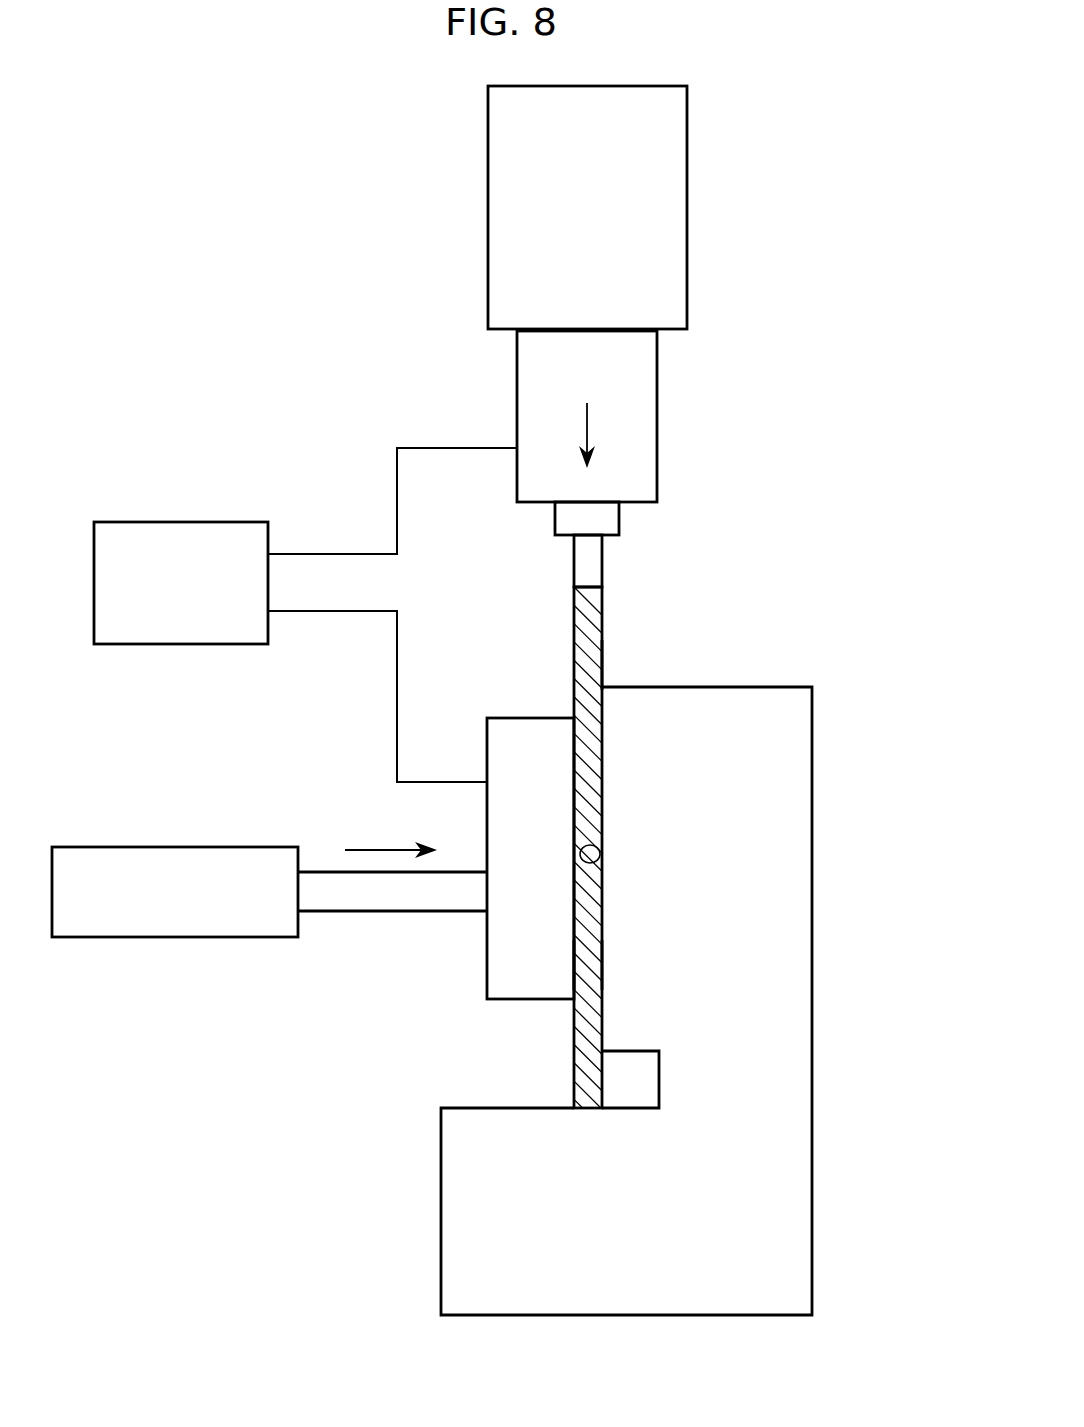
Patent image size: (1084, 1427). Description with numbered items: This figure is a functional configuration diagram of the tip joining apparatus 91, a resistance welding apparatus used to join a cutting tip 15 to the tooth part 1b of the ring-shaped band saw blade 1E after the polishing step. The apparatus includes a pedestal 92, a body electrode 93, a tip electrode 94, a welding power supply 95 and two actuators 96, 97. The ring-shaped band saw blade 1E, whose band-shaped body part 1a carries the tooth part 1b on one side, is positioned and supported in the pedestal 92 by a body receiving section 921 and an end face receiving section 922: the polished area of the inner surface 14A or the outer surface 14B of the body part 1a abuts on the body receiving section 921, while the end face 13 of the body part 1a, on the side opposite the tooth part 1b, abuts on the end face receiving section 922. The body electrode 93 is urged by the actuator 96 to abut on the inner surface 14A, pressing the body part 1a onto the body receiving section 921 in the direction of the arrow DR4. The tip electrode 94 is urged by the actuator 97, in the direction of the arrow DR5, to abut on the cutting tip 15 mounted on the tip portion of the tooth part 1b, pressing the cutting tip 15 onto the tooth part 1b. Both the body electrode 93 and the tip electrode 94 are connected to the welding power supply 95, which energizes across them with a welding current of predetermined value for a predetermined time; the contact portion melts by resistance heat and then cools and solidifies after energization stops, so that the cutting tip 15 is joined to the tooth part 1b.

The actuator 97 is at (687, 199).
The tip joining apparatus 91 is at (855, 284).
The tip electrode 94 is at (657, 464).
The arrow DR5 is at (590, 418).
The cutting tip 15 is at (619, 513).
The tooth part 1b is at (602, 560).
The ring-shaped band saw blade 1E is at (602, 617).
The body part 1a is at (602, 663).
The pedestal 92 is at (812, 862).
The end face receiving section 922 is at (486, 1107).
The body receiving section 921 is at (600, 845).
The outer surface 14B is at (602, 963).
The inner surface 14A is at (574, 967).
The body electrode 93 is at (487, 948).
The end face 13 is at (585, 1110).
The welding power supply 95 is at (175, 522).
The actuator 96 is at (178, 847).
The arrow DR4 is at (391, 837).